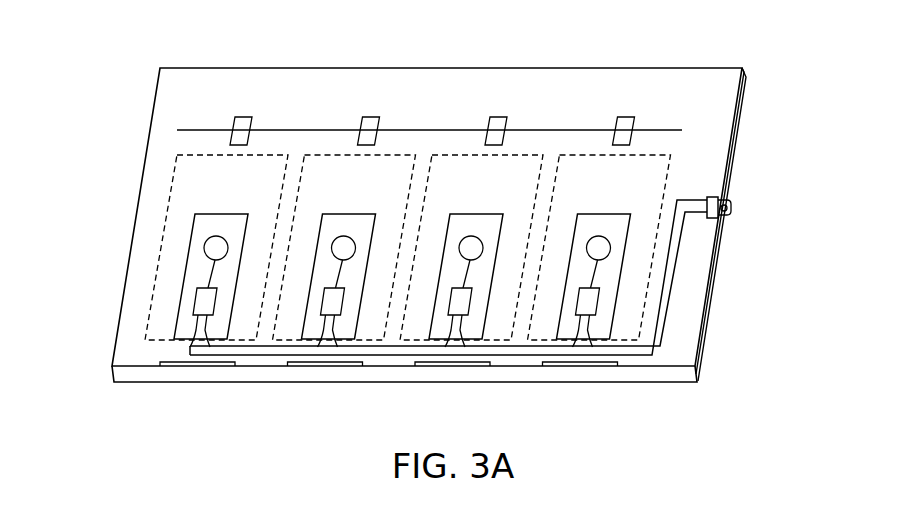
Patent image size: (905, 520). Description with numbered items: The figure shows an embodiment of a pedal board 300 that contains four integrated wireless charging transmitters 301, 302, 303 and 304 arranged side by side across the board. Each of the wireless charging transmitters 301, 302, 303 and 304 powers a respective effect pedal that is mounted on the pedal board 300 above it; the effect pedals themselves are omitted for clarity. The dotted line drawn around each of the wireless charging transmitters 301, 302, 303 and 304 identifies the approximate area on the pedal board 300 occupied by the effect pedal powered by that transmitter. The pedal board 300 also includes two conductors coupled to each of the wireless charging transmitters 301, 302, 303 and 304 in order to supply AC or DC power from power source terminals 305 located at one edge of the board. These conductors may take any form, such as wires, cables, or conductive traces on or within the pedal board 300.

The pedal board 300 is at (137, 36).
The wireless charging transmitter 301 is at (178, 312).
The wireless charging transmitter 302 is at (344, 289).
The wireless charging transmitter 303 is at (471, 289).
The wireless charging transmitter 304 is at (599, 289).
The power source terminals 305 is at (733, 207).